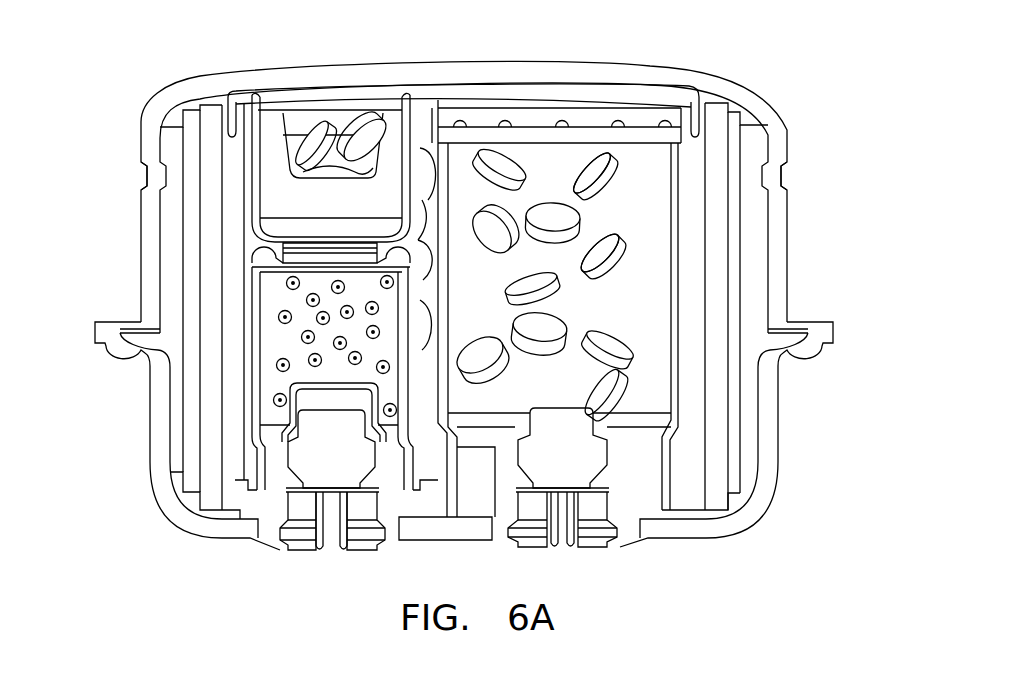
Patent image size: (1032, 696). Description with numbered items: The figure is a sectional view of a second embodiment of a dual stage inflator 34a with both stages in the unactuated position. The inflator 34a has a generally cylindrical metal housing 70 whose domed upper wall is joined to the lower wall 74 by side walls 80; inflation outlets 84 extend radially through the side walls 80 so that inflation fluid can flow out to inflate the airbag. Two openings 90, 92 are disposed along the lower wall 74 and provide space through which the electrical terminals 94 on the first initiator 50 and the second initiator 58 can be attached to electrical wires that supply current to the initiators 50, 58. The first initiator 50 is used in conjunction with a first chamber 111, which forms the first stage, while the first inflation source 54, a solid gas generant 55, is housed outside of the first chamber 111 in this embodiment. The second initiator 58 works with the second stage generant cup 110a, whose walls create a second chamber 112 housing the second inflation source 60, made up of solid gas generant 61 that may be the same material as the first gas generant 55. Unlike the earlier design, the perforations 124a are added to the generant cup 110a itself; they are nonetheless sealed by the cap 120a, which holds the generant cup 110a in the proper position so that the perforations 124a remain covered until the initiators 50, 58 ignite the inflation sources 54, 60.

The inflator 34a is at (778, 66).
The first inflation source 54 is at (367, 132).
The perforations 124a is at (515, 125).
The cap 120a is at (633, 137).
The inflation outlets 84 is at (147, 178).
The housing 70 is at (780, 222).
The side walls 80 is at (152, 258).
The first chamber 111 is at (282, 338).
The solid gas generant 55 is at (276, 365).
The solid gas generant 61 is at (602, 180).
The second inflation source 60 is at (610, 340).
The second chamber 112 is at (655, 352).
The second stage generant cup 110a is at (675, 397).
The lower wall 74 is at (753, 500).
The second initiator 58 is at (585, 455).
The first initiator 50 is at (308, 502).
The opening 90 is at (298, 558).
The electrical terminals 94 is at (320, 553).
The opening 92 is at (493, 553).